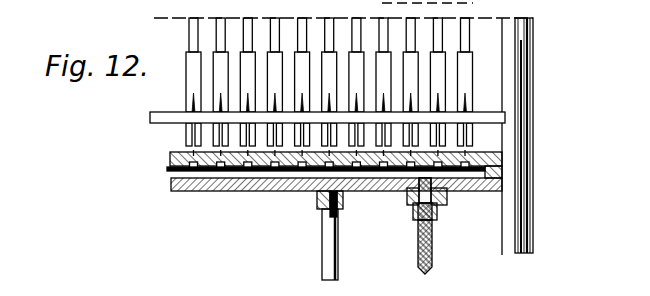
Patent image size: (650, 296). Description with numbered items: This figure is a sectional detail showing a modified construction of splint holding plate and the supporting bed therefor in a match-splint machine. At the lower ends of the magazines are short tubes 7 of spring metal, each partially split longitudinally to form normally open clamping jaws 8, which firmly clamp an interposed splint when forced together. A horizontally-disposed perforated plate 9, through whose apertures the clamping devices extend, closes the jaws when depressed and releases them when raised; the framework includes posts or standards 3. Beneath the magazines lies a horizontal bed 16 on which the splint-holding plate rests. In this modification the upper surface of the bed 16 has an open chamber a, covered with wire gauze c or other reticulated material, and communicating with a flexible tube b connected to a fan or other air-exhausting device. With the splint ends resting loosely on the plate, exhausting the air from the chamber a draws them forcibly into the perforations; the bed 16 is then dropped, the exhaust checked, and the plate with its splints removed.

The short tube of spring metal 7 is at (185, 87).
The horizontally-disposed perforated plate 9 is at (152, 124).
The posts or standards 3 is at (530, 98).
The clamping jaws 8 is at (473, 142).
The wire gauze c is at (166, 170).
The open chamber a is at (190, 191).
The horizontal bed 16 is at (336, 229).
The flexible tube b is at (433, 245).